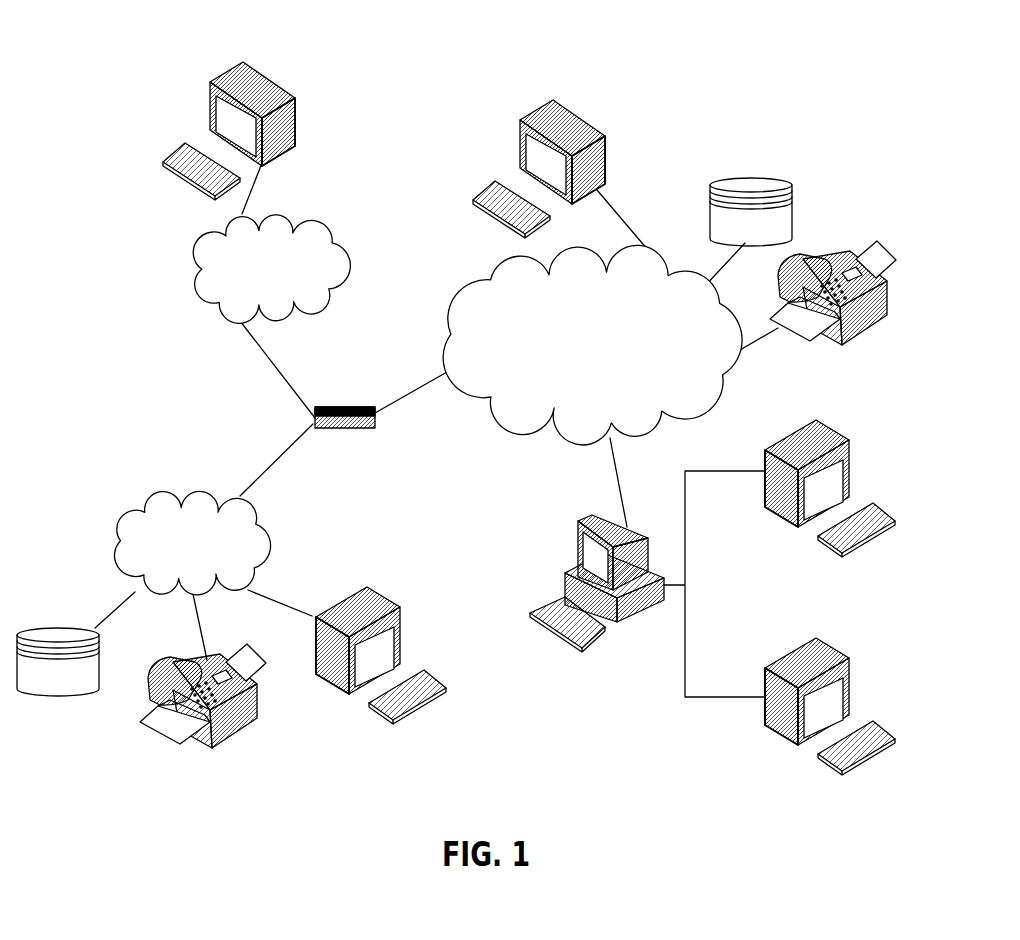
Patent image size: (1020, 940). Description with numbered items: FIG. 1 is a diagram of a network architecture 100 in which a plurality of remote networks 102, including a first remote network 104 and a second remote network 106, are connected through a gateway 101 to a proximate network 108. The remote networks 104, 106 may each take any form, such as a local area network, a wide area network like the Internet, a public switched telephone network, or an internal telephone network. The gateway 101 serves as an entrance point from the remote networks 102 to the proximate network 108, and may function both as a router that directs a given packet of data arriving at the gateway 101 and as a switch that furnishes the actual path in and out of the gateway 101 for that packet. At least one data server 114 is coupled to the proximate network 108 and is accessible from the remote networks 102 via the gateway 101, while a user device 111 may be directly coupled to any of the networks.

The architecture 100 is at (130, 42).
The gateway 101 is at (336, 405).
The remote networks 102 is at (157, 326).
The first remote network 104 is at (120, 516).
The second remote network 106 is at (334, 238).
The proximate network 108 is at (695, 408).
The user device 111 is at (605, 140).
The data server 114 is at (578, 538).